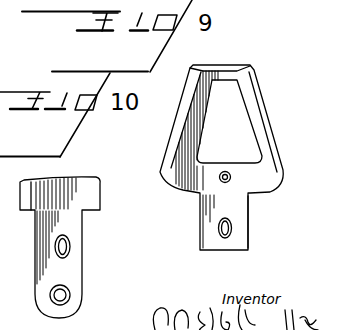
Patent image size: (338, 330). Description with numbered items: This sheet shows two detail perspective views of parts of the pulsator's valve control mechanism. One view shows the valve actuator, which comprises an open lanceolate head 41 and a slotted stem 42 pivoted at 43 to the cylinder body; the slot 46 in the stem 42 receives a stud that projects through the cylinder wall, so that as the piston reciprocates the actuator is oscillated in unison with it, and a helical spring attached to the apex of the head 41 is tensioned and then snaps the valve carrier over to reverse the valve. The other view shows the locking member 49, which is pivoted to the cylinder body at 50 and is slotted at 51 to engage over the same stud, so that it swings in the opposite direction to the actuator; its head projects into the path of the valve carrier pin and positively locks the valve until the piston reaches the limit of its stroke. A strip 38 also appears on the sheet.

In FIG. 9, the frame strip 38 is at (68, 0).
In FIG. 9, the lanceolate head 41 is at (257, 101).
In FIG. 9, the slotted stem 42 is at (250, 223).
In FIG. 9, the pivot 43 is at (228, 172).
In FIG. 9, the slot 46 is at (217, 230).
In FIG. 10, the locking member 49 is at (72, 179).
In FIG. 10, the pivot 50 is at (72, 295).
In FIG. 10, the slot 51 is at (72, 247).